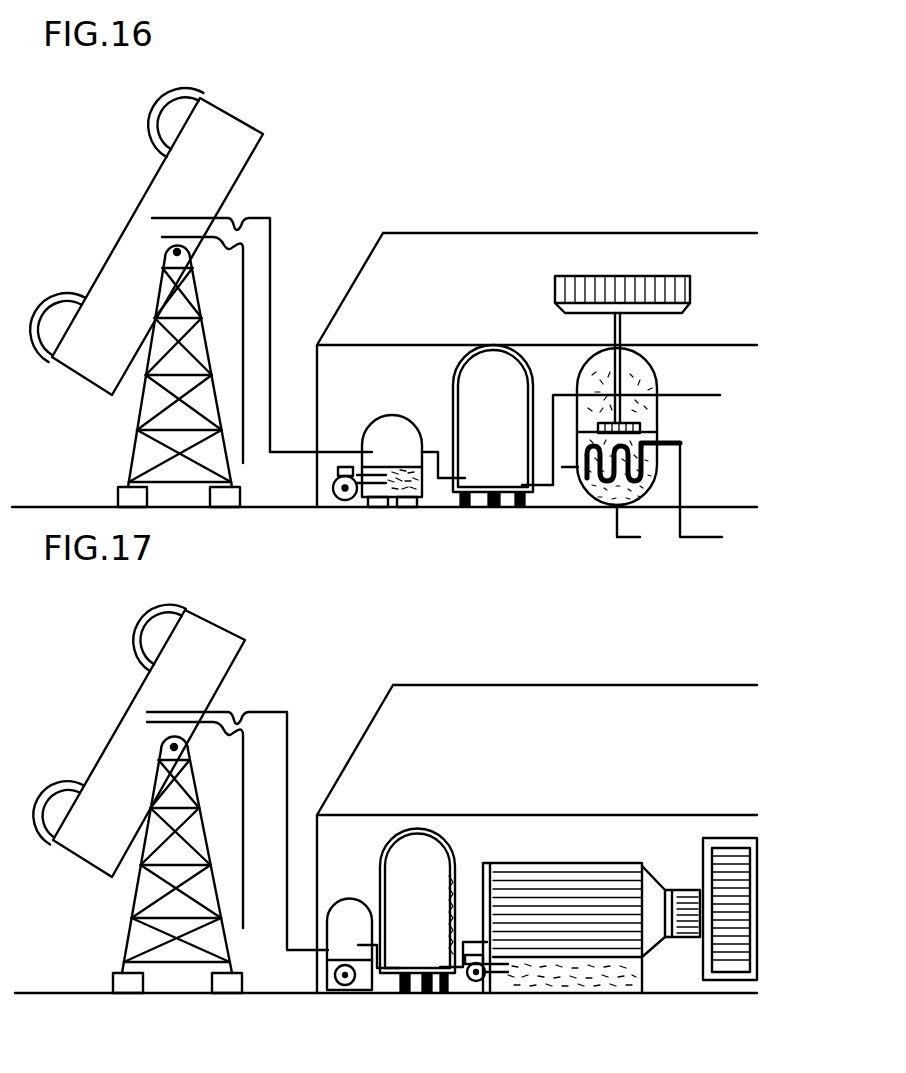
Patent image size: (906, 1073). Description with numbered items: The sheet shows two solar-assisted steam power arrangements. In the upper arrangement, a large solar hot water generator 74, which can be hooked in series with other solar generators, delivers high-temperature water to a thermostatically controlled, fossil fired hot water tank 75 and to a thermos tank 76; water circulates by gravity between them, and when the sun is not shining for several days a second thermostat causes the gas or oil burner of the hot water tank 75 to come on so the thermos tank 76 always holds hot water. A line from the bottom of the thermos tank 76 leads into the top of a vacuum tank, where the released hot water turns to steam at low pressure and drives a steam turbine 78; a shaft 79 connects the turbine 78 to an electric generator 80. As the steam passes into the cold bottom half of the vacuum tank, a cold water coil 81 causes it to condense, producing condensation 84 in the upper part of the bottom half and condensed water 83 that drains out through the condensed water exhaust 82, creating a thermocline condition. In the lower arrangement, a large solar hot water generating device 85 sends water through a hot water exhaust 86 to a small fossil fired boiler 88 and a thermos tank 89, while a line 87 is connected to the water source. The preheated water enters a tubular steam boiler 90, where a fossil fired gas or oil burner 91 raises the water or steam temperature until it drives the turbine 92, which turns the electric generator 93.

In FIG. 16, the solar hot water generator 74 is at (232, 110).
In FIG. 16, the fossil fired hot water tank 75 is at (372, 423).
In FIG. 16, the thermos tank 76 is at (486, 345).
In FIG. 16, the steam turbine 78 is at (640, 423).
In FIG. 16, the shaft 79 is at (620, 338).
In FIG. 16, the electric generator 80 is at (693, 280).
In FIG. 16, the cold water coil 81 is at (681, 466).
In FIG. 16, the condensed water exhaust 82 is at (623, 540).
In FIG. 16, the condensed water 83 is at (612, 498).
In FIG. 16, the condensation 84 is at (650, 432).
In FIG. 17, the solar hot water generating device 85 is at (227, 630).
In FIG. 17, the hot water exhaust 86 is at (284, 709).
In FIG. 17, the water source line 87 is at (247, 813).
In FIG. 17, the small fossil fired boiler 88 is at (347, 898).
In FIG. 17, the thermos tank 89 is at (453, 850).
In FIG. 17, the steam boiler 90 is at (549, 863).
In FIG. 17, the fossil fired burner 91 is at (478, 983).
In FIG. 17, the turbine 92 is at (683, 938).
In FIG. 17, the electric generator 93 is at (752, 908).